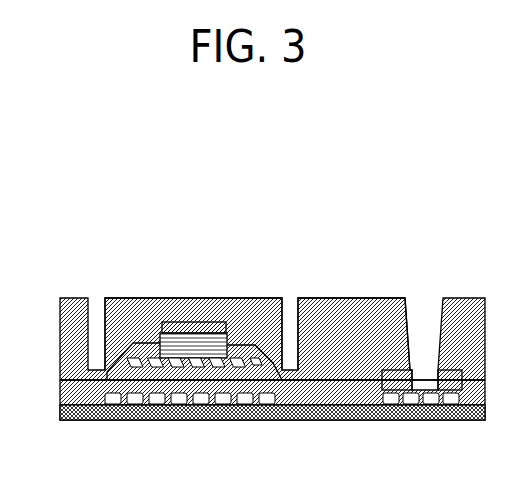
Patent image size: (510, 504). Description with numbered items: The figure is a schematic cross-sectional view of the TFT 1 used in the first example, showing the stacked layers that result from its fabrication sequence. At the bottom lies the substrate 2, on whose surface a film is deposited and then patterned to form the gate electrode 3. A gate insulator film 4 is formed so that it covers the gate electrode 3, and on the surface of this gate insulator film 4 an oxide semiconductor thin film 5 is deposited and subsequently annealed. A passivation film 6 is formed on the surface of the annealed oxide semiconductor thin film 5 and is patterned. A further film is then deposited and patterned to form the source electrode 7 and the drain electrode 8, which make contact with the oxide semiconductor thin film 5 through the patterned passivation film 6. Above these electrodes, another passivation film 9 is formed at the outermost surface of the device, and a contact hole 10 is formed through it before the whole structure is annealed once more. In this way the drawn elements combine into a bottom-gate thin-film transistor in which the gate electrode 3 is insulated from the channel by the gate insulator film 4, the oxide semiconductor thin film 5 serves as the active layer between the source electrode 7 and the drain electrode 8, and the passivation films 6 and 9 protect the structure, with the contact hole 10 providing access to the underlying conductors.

The TFT 1 is at (106, 233).
The substrate 2 is at (207, 422).
The gate electrode 3 is at (117, 422).
The gate insulator film 4 is at (85, 422).
The oxide semiconductor thin film 5 is at (172, 422).
The passivation film 6 is at (195, 298).
The source electrode 7 is at (142, 298).
The drain electrode 8 is at (242, 298).
The passivation film 9 is at (339, 298).
The contact hole 10 is at (416, 422).